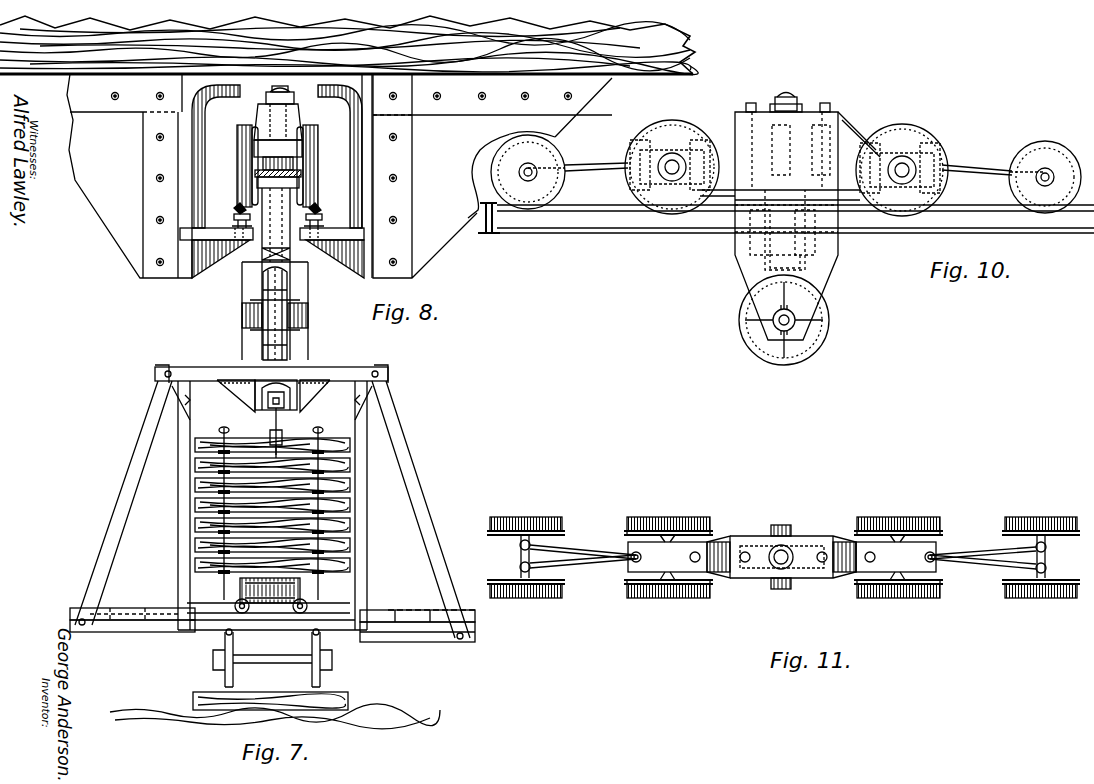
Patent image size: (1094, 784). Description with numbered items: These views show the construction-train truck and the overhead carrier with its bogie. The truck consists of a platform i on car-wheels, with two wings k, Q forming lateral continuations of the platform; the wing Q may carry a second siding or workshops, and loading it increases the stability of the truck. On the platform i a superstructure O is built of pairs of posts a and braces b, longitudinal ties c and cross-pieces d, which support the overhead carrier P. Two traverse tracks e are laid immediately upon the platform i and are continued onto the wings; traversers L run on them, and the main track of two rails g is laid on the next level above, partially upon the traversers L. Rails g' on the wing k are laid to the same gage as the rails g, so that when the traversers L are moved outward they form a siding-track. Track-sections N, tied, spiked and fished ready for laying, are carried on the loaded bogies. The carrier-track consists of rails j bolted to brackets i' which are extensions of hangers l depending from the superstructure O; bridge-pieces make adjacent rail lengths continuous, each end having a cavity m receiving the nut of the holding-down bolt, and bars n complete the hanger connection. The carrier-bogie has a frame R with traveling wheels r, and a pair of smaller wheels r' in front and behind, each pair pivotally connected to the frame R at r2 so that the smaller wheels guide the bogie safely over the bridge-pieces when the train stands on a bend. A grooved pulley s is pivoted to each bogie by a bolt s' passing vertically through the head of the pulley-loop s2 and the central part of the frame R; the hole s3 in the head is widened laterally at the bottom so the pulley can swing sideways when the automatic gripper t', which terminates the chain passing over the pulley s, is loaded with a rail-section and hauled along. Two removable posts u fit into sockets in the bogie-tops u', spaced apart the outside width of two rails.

In FIG. 8, the cross-pieces d is at (676, 48).
In FIG. 7, the cross-pieces d is at (331, 376).
In FIG. 8, the hangers l is at (339, 176).
In FIG. 7, the hangers l is at (236, 390).
In FIG. 8, the superstructure O is at (282, 175).
In FIG. 8, the bar n is at (272, 252).
In FIG. 8, the gusset bracket i' is at (278, 270).
In FIG. 8, the bolt s' is at (287, 87).
In FIG. 10, the bolt s' is at (788, 91).
In FIG. 8, the frame of the bogie R is at (262, 122).
In FIG. 10, the frame of the bogie R is at (852, 118).
In FIG. 11, the frame of the bogie R is at (814, 540).
In FIG. 8, the traveling wheels r is at (275, 157).
In FIG. 10, the traveling wheels r is at (788, 157).
In FIG. 11, the traveling wheels r is at (783, 557).
In FIG. 8, the smaller wheels r' is at (275, 166).
In FIG. 10, the smaller wheels r' is at (786, 174).
In FIG. 11, the smaller wheels r' is at (783, 559).
In FIG. 8, the rails j is at (234, 205).
In FIG. 7, the rails j is at (271, 497).
In FIG. 8, the cavity m is at (236, 217).
In FIG. 8, the pulley-loop s2 is at (258, 282).
In FIG. 10, the pulley-loop s2 is at (822, 266).
In FIG. 8, the hole s3 is at (264, 234).
In FIG. 8, the grooved pulley s is at (286, 313).
In FIG. 10, the grooved pulley s is at (798, 320).
In FIG. 7, the grooved pulley s is at (271, 423).
In FIG. 7, the braces b is at (130, 518).
In FIG. 7, the wing Q is at (272, 632).
In FIG. 7, the posts a is at (368, 498).
In FIG. 7, the longitudinal ties c is at (265, 406).
In FIG. 7, the overhead carrier P is at (288, 407).
In FIG. 7, the automatic gripper t' is at (285, 436).
In FIG. 7, the track-sections N is at (226, 448).
In FIG. 7, the removable posts u is at (269, 505).
In FIG. 7, the bogie-tops u' is at (249, 587).
In FIG. 7, the traversers L is at (308, 604).
In FIG. 7, the rails g is at (266, 617).
In FIG. 7, the rails g' is at (427, 593).
In FIG. 7, the platform i is at (275, 679).
In FIG. 7, the traverse tracks e is at (330, 626).
In FIG. 7, the wing k is at (420, 628).
In FIG. 11, the pivotal connection r2 is at (632, 554).